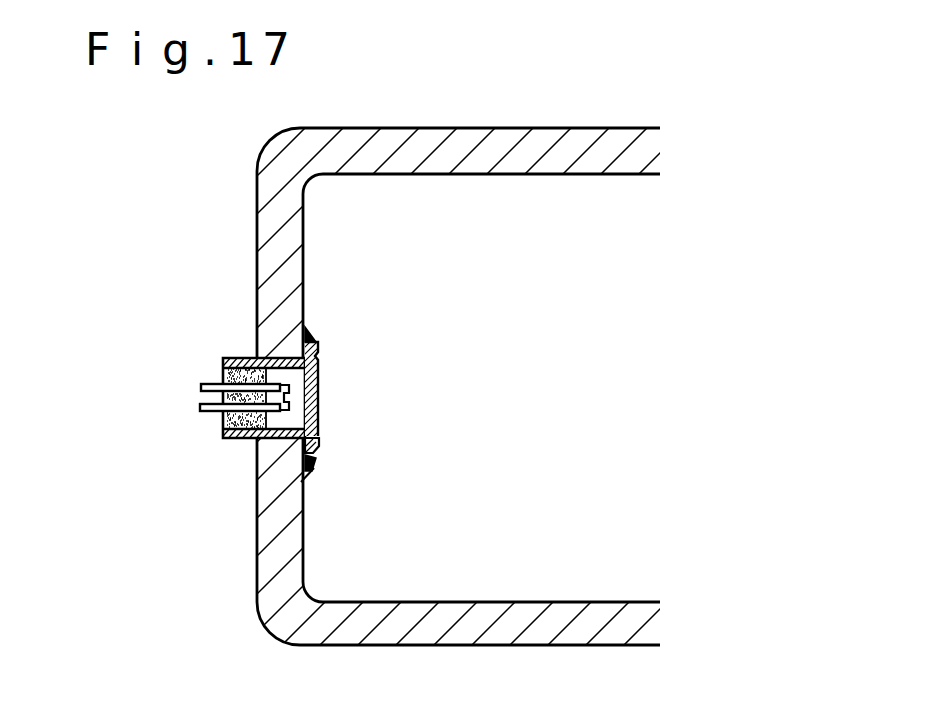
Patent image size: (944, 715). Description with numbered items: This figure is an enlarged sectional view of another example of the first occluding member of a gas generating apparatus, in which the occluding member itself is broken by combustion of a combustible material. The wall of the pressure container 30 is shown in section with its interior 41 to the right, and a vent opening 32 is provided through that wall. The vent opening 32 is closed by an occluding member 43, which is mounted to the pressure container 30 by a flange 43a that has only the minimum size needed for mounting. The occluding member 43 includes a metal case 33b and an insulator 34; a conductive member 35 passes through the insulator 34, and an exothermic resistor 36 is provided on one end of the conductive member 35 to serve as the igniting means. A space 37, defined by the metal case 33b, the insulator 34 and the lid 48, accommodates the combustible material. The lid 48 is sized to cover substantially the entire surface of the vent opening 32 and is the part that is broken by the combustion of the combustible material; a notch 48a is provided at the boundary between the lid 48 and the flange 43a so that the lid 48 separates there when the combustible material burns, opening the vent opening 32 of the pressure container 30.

The pressure container 30 is at (507, 143).
The interior space 41 is at (478, 247).
The space 37 is at (290, 377).
The lid 48 is at (318, 378).
The conductive member 35 is at (212, 387).
The insulator 34 is at (203, 398).
The exothermic resistor 36 is at (292, 405).
The notch 48a is at (319, 443).
The metal case 33b is at (226, 439).
The occluding member 43 is at (243, 438).
The vent opening 32 is at (255, 455).
The flange 43a is at (313, 475).